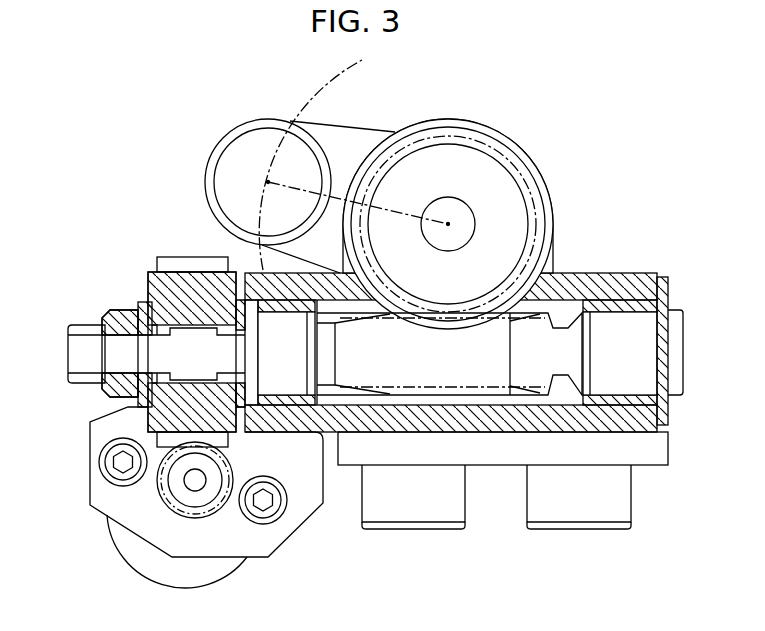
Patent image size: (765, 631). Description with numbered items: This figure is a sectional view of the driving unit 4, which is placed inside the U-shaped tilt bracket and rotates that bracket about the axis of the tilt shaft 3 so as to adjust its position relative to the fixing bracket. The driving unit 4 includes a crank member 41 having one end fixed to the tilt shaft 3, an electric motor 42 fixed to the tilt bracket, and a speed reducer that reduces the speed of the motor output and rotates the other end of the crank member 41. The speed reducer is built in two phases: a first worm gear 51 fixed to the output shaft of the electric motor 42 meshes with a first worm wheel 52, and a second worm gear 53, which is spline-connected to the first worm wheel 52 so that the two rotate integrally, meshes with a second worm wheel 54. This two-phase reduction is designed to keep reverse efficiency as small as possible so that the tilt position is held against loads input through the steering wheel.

The tilt shaft 3 is at (242, 148).
The driving unit 4 is at (337, 500).
The crank member 41 is at (343, 135).
The electric motor 42 is at (205, 567).
The first worm gear 51 is at (163, 490).
The first worm wheel 52 is at (157, 278).
The second worm gear 53 is at (461, 388).
The second worm wheel 54 is at (525, 177).